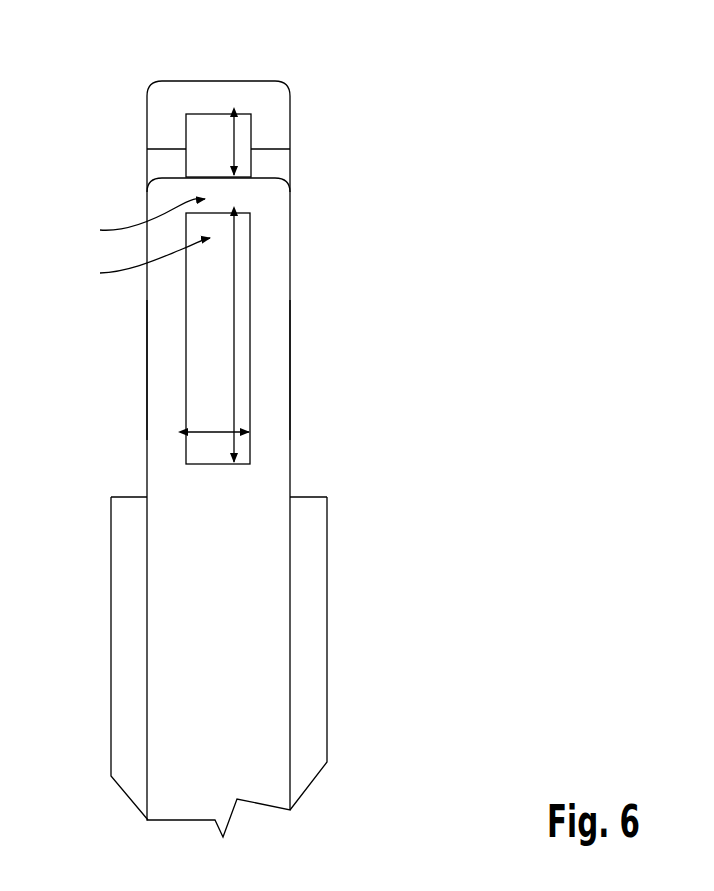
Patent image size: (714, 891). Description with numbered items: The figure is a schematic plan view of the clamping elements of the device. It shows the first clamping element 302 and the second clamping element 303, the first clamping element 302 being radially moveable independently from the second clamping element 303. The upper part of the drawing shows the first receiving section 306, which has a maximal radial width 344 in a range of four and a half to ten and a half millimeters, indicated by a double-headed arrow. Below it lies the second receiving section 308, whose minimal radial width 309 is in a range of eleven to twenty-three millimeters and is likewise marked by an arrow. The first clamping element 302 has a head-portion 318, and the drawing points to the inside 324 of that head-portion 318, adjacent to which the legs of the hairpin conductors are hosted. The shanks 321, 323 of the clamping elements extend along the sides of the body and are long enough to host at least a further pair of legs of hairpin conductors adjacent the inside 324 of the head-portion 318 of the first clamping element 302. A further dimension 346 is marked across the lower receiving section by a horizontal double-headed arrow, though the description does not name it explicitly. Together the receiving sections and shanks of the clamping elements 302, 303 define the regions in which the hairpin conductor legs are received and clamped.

The first clamping element 302 is at (162, 418).
The second clamping element 303 is at (158, 133).
The first receiving section 306 is at (214, 128).
The second receiving section 308 is at (207, 302).
The minimal radial width 309 is at (234, 324).
The head-portion 318 is at (130, 222).
The shank 321 is at (176, 174).
The shank 323 is at (170, 367).
The inside of the head-portion 324 is at (132, 263).
The maximal radial width 344 is at (245, 153).
The width of recess 346 is at (227, 432).